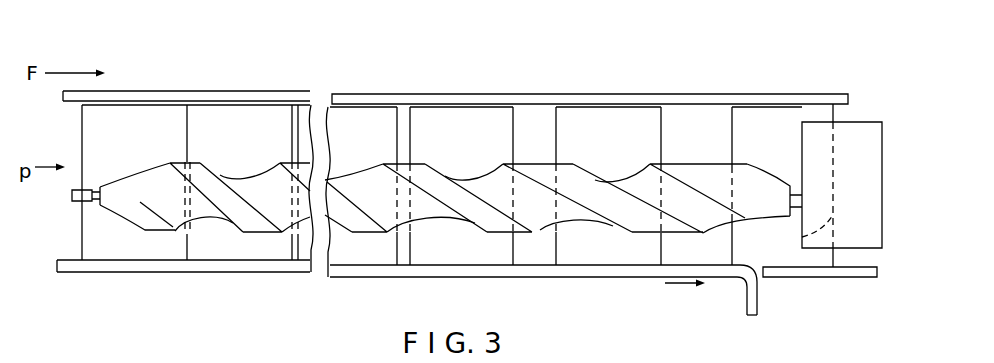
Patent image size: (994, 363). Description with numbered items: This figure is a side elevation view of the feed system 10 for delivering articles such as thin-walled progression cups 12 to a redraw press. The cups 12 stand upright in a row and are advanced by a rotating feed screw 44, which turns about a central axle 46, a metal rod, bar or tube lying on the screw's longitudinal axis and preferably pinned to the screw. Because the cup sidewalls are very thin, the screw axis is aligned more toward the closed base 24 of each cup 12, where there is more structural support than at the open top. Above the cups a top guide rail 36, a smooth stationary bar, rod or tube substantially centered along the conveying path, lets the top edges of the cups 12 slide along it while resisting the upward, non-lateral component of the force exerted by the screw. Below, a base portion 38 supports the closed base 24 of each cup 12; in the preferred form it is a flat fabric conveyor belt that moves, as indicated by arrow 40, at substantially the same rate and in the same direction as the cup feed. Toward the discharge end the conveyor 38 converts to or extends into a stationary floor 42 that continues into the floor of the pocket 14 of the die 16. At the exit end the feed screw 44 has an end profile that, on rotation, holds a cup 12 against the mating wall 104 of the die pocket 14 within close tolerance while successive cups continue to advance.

The feed system 10 is at (477, 70).
The progression cups 12 is at (122, 112).
The pocket 14 is at (828, 168).
The die 16 is at (860, 112).
The closed base 24 is at (460, 266).
The top guide rail 36 is at (243, 91).
The base portion 38 is at (242, 273).
The arrow 40 is at (694, 285).
The stationary floor 42 is at (807, 278).
The feed screw 44 is at (718, 173).
The central axle 46 is at (89, 204).
The mating wall 104 is at (802, 237).